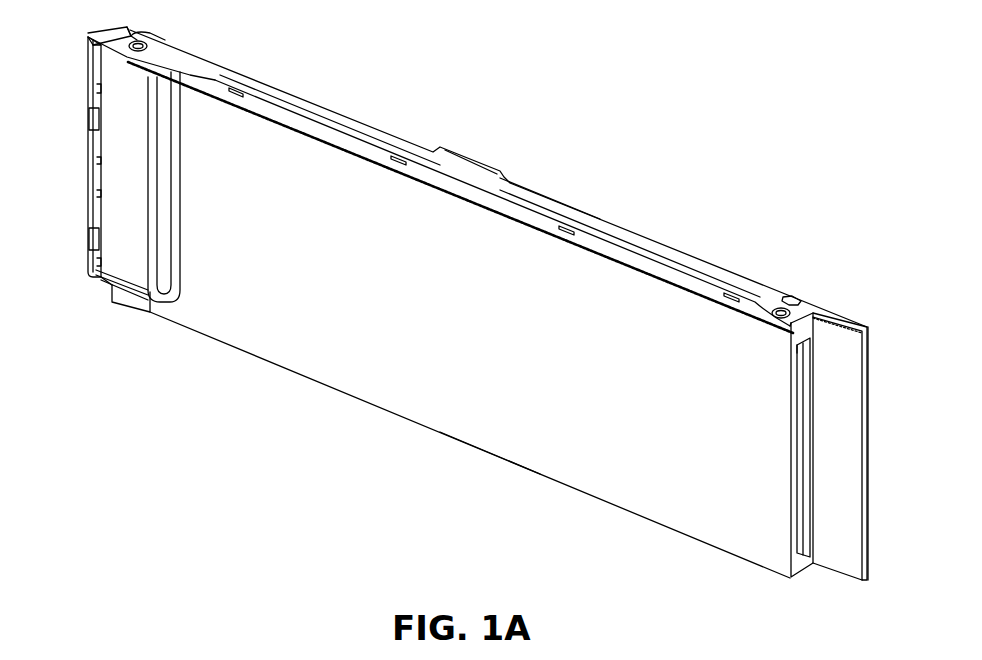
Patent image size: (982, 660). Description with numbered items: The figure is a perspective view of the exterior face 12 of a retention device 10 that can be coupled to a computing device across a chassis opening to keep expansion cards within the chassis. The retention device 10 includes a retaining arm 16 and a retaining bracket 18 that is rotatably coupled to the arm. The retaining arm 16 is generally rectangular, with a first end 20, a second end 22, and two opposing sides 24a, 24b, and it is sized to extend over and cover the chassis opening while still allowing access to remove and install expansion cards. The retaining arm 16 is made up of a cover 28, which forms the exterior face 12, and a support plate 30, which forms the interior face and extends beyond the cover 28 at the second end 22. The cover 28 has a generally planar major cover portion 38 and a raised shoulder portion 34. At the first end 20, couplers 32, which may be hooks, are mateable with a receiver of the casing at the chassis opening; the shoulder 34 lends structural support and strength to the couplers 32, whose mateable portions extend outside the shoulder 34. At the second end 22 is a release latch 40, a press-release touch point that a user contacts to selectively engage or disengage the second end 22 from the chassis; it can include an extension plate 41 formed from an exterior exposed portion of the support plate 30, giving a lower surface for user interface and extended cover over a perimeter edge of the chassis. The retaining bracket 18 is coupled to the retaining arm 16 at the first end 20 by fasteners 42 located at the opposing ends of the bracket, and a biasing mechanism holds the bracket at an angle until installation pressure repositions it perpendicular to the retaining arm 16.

The retention device 10 is at (742, 80).
The exterior face 12 is at (340, 377).
The retaining arm 16 is at (370, 95).
The retaining bracket 18 is at (72, 49).
The first end 20 is at (110, 292).
The second end 22 is at (870, 386).
The opposing side 24a is at (540, 205).
The opposing side 24b is at (483, 452).
The cover 28 is at (616, 452).
The support plate 30 is at (657, 243).
The coupler 32 is at (88, 120).
The raised shoulder portion 34 is at (132, 256).
The major cover portion 38 is at (250, 315).
The release latch 40 is at (812, 518).
The extension plate 41 is at (848, 451).
The fasteners 42 is at (150, 43).